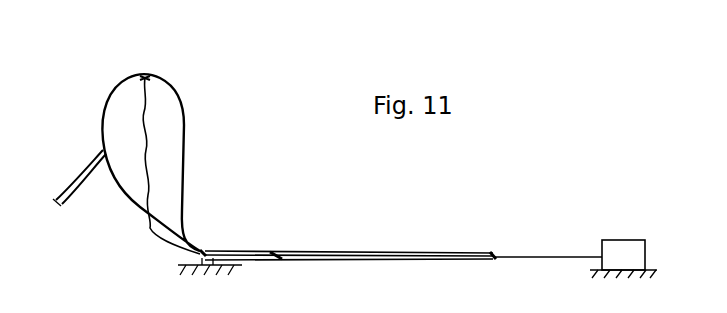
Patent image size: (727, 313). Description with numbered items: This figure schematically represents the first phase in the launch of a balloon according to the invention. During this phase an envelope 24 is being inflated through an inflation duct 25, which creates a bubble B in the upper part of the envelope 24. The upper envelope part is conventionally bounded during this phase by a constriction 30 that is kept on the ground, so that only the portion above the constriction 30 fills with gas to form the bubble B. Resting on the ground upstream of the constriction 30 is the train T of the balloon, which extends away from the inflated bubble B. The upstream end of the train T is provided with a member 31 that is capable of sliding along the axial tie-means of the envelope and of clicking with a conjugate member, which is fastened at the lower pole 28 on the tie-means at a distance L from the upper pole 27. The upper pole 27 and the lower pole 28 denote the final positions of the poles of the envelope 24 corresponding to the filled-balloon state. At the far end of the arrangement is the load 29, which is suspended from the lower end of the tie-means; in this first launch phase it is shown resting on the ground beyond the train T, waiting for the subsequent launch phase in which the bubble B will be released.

The envelope 24 is at (184, 110).
The inflation duct 25 is at (80, 180).
The upper pole of the envelope 27 is at (149, 77).
The lower pole of the envelope 28 is at (275, 253).
The load 29 is at (627, 250).
The constriction 30 is at (203, 248).
The sliding member 31 is at (494, 252).
The bubble B is at (192, 160).
The train T is at (413, 266).